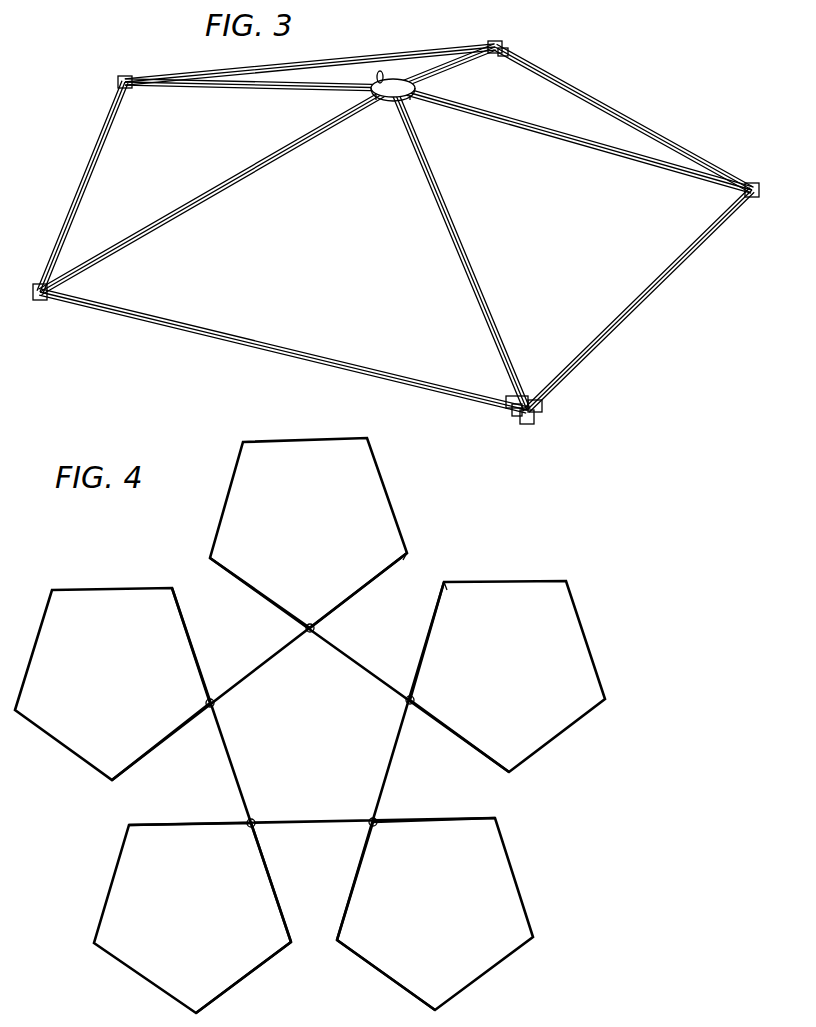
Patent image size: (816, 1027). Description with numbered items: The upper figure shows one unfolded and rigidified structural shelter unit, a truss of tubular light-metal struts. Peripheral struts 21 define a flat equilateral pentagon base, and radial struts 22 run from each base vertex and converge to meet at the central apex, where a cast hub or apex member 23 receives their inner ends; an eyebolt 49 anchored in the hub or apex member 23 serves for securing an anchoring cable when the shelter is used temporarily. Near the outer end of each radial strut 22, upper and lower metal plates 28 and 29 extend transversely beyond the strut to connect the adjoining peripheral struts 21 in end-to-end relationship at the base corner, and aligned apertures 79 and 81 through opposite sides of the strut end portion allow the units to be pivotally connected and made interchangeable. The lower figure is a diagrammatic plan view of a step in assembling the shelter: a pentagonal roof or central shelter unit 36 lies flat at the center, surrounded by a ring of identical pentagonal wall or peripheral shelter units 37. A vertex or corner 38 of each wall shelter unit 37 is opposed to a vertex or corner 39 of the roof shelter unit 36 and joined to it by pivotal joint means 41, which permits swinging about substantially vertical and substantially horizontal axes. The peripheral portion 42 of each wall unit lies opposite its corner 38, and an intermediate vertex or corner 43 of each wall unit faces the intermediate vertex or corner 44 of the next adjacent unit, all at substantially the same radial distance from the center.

In FIG. 3, the peripheral struts 21 is at (663, 277).
In FIG. 3, the radial struts 22 is at (452, 215).
In FIG. 3, the hub or apex member 23 is at (416, 76).
In FIG. 3, the eyebolt 49 is at (381, 71).
In FIG. 3, the aligned aperture 79 is at (498, 47).
In FIG. 3, the aligned aperture 81 is at (504, 50).
In FIG. 3, the upper metal plate 28 is at (508, 398).
In FIG. 3, the lower metal plate 29 is at (545, 415).
In FIG. 4, the peripheral portion 42 is at (305, 441).
In FIG. 4, the intermediate vertex or corner 43 is at (210, 559).
In FIG. 4, the intermediate vertex or corner 44 is at (408, 553).
In FIG. 4, the roof or central shelter unit 36 is at (392, 788).
In FIG. 4, the wall or peripheral shelter unit 37 is at (388, 996).
In FIG. 4, the vertex or corner of wall shelter unit 38 is at (410, 698).
In FIG. 4, the vertex or corner of roof shelter unit 39 is at (397, 707).
In FIG. 4, the pivotal joint means 41 is at (245, 822).